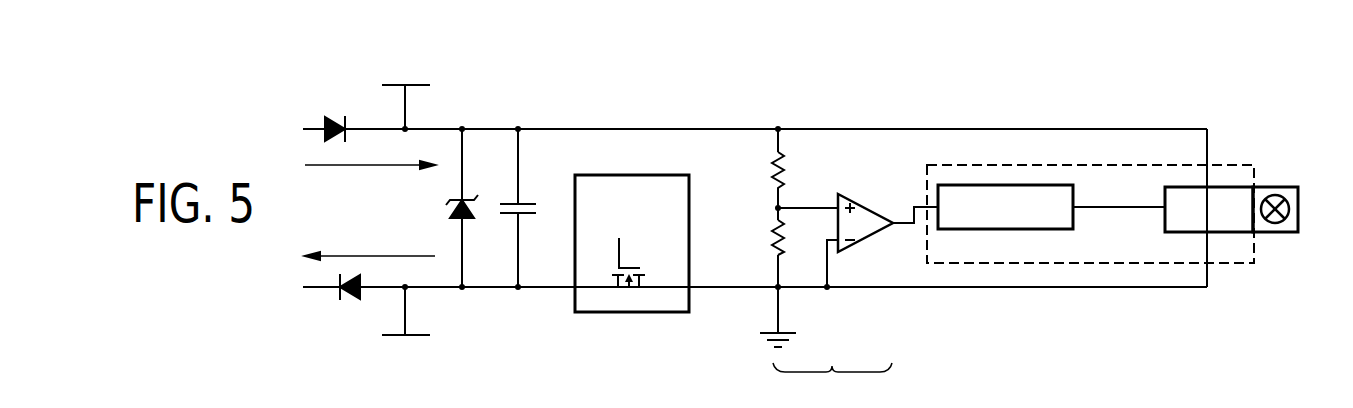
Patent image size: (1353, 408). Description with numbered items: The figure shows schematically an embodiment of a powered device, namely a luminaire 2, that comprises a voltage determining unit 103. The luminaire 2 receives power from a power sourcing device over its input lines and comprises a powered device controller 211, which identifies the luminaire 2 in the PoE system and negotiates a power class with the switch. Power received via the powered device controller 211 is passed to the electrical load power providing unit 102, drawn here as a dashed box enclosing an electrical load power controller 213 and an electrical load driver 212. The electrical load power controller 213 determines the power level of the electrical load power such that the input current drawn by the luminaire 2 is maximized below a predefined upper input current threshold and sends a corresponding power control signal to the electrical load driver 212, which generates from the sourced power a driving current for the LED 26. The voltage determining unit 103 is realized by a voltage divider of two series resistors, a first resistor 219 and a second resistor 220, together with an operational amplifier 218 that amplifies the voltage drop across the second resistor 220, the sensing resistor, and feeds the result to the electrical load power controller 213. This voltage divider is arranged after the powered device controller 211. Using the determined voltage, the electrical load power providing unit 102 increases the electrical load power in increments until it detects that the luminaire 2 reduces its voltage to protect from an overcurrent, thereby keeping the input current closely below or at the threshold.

The luminaire 2 is at (660, 100).
The first resistor 219 is at (760, 150).
The second resistor 220 is at (764, 264).
The comparator / operational amplifier 218 is at (865, 258).
The voltage determining unit 103 is at (832, 385).
The powered device controller 211 is at (637, 313).
The electrical load power controller 213 is at (1027, 185).
The electrical load power providing unit 102 is at (1225, 165).
The electrical load driver 212 is at (1238, 233).
The LED 26 is at (1282, 233).